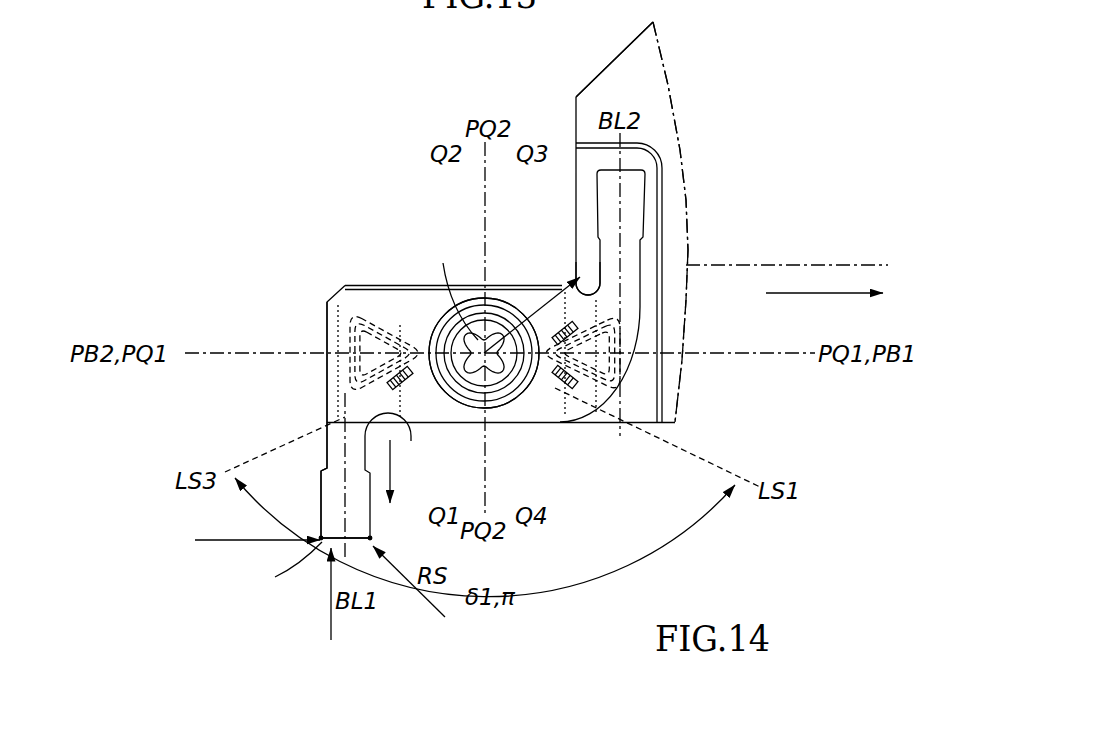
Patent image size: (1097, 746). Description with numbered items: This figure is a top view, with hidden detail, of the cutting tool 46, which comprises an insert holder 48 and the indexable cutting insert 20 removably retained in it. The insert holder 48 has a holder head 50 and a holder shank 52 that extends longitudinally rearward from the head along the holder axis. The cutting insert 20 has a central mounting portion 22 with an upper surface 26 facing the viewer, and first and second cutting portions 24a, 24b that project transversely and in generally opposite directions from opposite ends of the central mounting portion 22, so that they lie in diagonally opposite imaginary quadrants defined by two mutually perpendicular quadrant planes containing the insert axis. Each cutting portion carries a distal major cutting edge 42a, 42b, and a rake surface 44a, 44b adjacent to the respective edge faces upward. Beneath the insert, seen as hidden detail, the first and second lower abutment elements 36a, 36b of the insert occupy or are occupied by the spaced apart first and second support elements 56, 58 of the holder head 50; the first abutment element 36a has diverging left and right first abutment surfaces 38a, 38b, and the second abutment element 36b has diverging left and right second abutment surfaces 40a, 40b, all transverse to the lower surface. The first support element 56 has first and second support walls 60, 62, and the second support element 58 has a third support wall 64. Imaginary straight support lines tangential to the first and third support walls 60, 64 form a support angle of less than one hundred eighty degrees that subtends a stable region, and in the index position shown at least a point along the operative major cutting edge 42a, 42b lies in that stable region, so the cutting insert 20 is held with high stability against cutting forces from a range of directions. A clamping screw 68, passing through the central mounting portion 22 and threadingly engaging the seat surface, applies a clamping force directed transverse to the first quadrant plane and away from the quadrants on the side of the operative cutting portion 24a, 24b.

The cutting insert 20 is at (362, 311).
The central mounting portion 22 is at (457, 413).
The first cutting portion 24a is at (323, 469).
The second cutting portion 24b is at (648, 200).
The upper surface 26 is at (461, 420).
The first lower abutment element 36a is at (383, 363).
The second lower abutment element 36b is at (590, 371).
The left first abutment surface 38a is at (400, 322).
The right first abutment surface 38b is at (411, 441).
The left second abutment surface 40a is at (557, 393).
The right second abutment surface 40b is at (563, 287).
The first major cutting edge 42a is at (362, 543).
The second major cutting edge 42b is at (630, 168).
The rake surface of the first cutting portion 44a is at (340, 513).
The rake surface of the second cutting portion 44b is at (633, 193).
The cutting tool 46 is at (680, 78).
The insert holder 48 is at (599, 100).
The holder head 50 is at (390, 285).
The holder shank 52 is at (679, 251).
The first support element 56 is at (586, 336).
The second support element 58 is at (382, 342).
The first support wall 60 is at (542, 402).
The second support wall 62 is at (550, 325).
The third support wall 64 is at (411, 436).
The clamping screw 68 is at (498, 369).